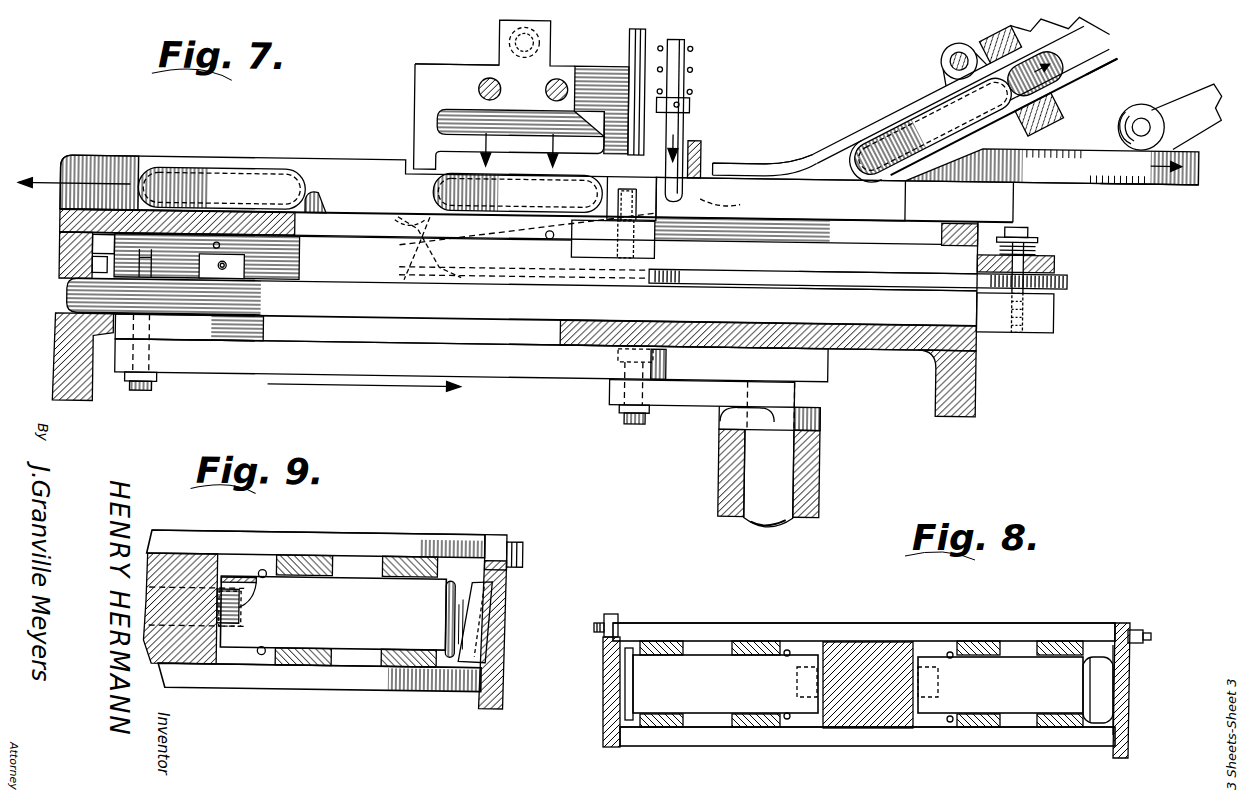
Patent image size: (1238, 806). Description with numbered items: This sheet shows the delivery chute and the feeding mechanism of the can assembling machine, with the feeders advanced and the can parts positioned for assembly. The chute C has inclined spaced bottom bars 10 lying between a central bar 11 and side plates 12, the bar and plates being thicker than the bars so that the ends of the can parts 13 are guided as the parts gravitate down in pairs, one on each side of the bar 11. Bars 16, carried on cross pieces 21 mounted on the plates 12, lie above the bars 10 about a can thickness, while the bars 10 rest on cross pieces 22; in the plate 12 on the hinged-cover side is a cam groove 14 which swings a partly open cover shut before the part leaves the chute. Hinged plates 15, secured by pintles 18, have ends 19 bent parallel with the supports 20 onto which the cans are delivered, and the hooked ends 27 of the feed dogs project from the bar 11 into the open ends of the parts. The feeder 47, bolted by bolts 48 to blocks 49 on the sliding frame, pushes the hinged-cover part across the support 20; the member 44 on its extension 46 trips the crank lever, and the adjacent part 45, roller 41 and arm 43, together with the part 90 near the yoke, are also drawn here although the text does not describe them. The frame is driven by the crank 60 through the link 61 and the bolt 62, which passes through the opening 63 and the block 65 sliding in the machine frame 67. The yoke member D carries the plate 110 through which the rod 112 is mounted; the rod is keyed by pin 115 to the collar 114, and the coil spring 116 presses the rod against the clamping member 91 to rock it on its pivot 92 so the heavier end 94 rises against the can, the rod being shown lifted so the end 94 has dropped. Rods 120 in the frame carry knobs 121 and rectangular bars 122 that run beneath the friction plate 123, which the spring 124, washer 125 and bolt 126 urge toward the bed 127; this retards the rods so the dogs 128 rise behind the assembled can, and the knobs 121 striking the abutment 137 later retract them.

In FIG. 9, the bottom bars 10 is at (322, 666).
In FIG. 8, the bottom bars 10 is at (762, 728).
In FIG. 9, the central bar 11 is at (200, 556).
In FIG. 8, the central bar 11 is at (868, 648).
In FIG. 9, the side plates 12 is at (520, 645).
In FIG. 8, the side plates 12 is at (613, 688).
In FIG. 7, the can parts 13 is at (235, 168).
In FIG. 9, the can parts 13 is at (333, 613).
In FIG. 8, the can parts 13 is at (873, 689).
In FIG. 9, the cam groove 14 is at (505, 615).
In FIG. 8, the cam groove 14 is at (1120, 678).
In FIG. 7, the hinged plates 15 is at (864, 124).
In FIG. 9, the bars 16 is at (308, 552).
In FIG. 8, the bars 16 is at (672, 640).
In FIG. 7, the pintles 18 is at (944, 58).
In FIG. 7, the ends of plates 19 is at (770, 157).
In FIG. 7, the supports 20 is at (60, 220).
In FIG. 7, the cross pieces 21 is at (975, 38).
In FIG. 9, the cross pieces 21 is at (255, 545).
In FIG. 8, the cross pieces 21 is at (662, 616).
In FIG. 7, the cross pieces 22 is at (1045, 112).
In FIG. 9, the cross pieces 22 is at (277, 675).
In FIG. 8, the cross pieces 22 is at (877, 737).
In FIG. 9, the hooked ends 27 is at (250, 600).
In FIG. 8, the hooked ends 27 is at (815, 635).
In FIG. 7, the roller 41 is at (1153, 96).
In FIG. 7, the arm 43 is at (1207, 76).
In FIG. 7, the tripping member 44 is at (1166, 176).
In FIG. 7, the guide block 45 is at (982, 150).
In FIG. 7, the extension 46 is at (1018, 204).
In FIG. 7, the feeder 47 is at (740, 150).
In FIG. 7, the bolts 48 is at (649, 170).
In FIG. 7, the blocks 49 is at (655, 245).
In FIG. 7, the crank 60 is at (720, 390).
In FIG. 7, the link 61 is at (257, 357).
In FIG. 7, the bolt 62 is at (138, 389).
In FIG. 7, the opening 63 is at (205, 276).
In FIG. 7, the block 65 is at (245, 320).
In FIG. 7, the machine frame 67 is at (880, 337).
In FIG. 7, the bracket 90 is at (450, 143).
In FIG. 7, the clamping member 91 is at (712, 192).
In FIG. 7, the pivot 92 is at (650, 268).
In FIG. 7, the end of clamping member 94 is at (400, 215).
In FIG. 7, the plate 110 is at (628, 37).
In FIG. 7, the rod 112 is at (684, 40).
In FIG. 7, the collar 114 is at (692, 112).
In FIG. 7, the pin 115 is at (689, 98).
In FIG. 7, the coil spring 116 is at (691, 47).
In FIG. 7, the rods 120 is at (372, 282).
In FIG. 7, the knobs 121 is at (68, 290).
In FIG. 7, the rectangular bars 122 is at (880, 259).
In FIG. 7, the friction plate 123 is at (1058, 250).
In FIG. 7, the spring 124 is at (1040, 231).
In FIG. 7, the washer 125 is at (1040, 222).
In FIG. 7, the bolt 126 is at (1070, 267).
In FIG. 7, the bed 127 is at (1056, 313).
In FIG. 7, the feed dogs 128 is at (320, 190).
In FIG. 7, the abutment 137 is at (62, 240).
In FIG. 7, the chute C is at (1118, 43).
In FIG. 7, the yoke member D is at (441, 73).